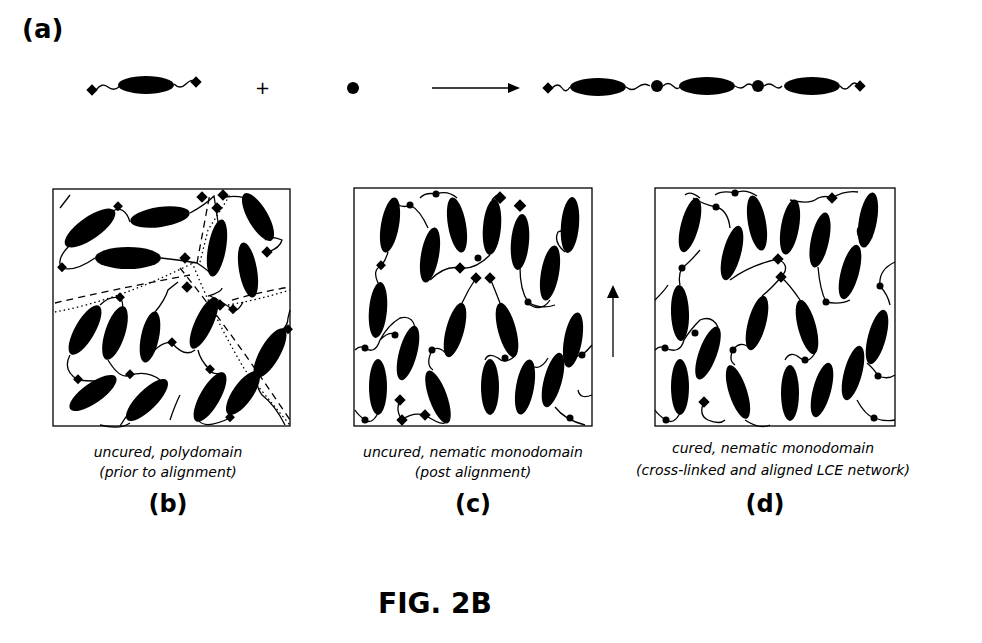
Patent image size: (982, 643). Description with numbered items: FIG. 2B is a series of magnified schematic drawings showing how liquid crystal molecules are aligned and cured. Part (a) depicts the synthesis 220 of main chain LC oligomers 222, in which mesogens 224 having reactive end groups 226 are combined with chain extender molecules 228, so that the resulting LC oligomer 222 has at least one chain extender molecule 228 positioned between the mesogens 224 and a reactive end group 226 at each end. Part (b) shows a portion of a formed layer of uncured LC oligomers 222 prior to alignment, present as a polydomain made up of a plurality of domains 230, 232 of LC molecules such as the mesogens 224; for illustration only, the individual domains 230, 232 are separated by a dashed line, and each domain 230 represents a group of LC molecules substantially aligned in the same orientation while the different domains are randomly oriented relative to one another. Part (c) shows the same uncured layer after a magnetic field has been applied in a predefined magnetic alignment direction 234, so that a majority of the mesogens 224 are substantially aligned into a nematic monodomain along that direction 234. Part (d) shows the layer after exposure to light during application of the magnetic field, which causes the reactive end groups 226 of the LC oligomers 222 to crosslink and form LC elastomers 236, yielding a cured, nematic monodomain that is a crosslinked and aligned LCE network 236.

The synthesis 220 is at (160, 47).
The LC oligomer 222 is at (790, 49).
The mesogen 224 is at (140, 94).
The reactive end group 226 is at (199, 80).
The chain extender molecule 228 is at (360, 84).
The domain 230 is at (70, 286).
The domain 232 is at (70, 312).
The magnetic alignment direction 234 is at (618, 332).
The LC elastomer 236 is at (675, 202).